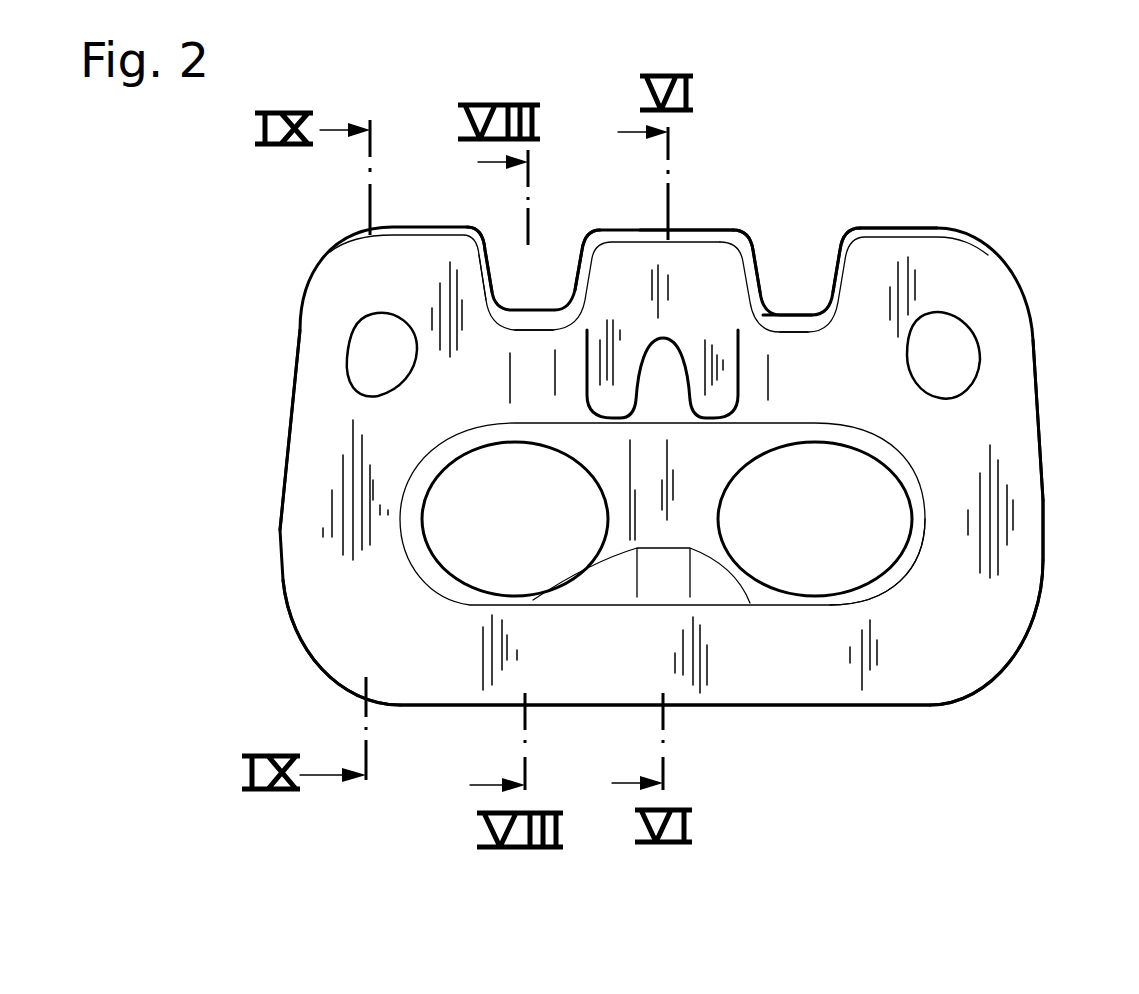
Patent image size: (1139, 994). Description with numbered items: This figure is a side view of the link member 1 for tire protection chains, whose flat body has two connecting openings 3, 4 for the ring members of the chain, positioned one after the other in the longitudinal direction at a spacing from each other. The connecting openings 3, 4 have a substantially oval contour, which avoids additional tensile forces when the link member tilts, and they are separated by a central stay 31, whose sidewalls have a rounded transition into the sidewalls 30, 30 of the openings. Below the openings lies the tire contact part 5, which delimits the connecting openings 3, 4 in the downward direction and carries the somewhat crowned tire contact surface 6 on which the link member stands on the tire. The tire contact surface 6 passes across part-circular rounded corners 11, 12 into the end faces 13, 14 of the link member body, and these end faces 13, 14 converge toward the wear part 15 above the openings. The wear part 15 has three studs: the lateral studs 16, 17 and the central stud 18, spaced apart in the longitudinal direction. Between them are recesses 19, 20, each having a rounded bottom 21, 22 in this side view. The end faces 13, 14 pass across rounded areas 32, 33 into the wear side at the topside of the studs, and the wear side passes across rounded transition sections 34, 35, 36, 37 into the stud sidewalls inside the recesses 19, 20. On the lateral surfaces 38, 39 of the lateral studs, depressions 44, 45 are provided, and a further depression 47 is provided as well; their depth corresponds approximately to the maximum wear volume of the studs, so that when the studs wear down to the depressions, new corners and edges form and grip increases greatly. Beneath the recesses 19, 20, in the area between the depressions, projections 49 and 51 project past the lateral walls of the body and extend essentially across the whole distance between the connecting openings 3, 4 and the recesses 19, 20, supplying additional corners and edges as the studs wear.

The link member 1 is at (975, 221).
The connecting opening 3 is at (900, 527).
The connecting opening 4 is at (437, 540).
The tire contact part 5 is at (1055, 591).
The tire contact surface 6 is at (728, 708).
The part-circular rounded corner 11 is at (1027, 638).
The part-circular rounded corner 12 is at (343, 683).
The end face 13 is at (1037, 417).
The end face 14 is at (280, 510).
The wear part 15 is at (932, 221).
The lateral stud 16 is at (406, 241).
The lateral stud 17 is at (893, 250).
The central stud 18 is at (703, 221).
The recess 19 is at (800, 297).
The recess 20 is at (548, 277).
The rounded bottom 21 is at (800, 320).
The rounded bottom 22 is at (517, 312).
The sidewall of connecting opening 30 is at (478, 585).
The central stay 31 is at (637, 545).
The rounded area 32 is at (980, 245).
The rounded area 33 is at (332, 253).
The rounded transition section 34 is at (845, 235).
The rounded transition section 35 is at (745, 230).
The rounded transition section 36 is at (587, 227).
The rounded transition section 37 is at (483, 240).
The lateral surface 38 is at (997, 337).
The lateral surface 39 is at (323, 338).
The depression 44 is at (947, 333).
The depression 45 is at (363, 372).
The depression 47 is at (683, 403).
The projection 49 is at (797, 390).
The projection 51 is at (523, 377).